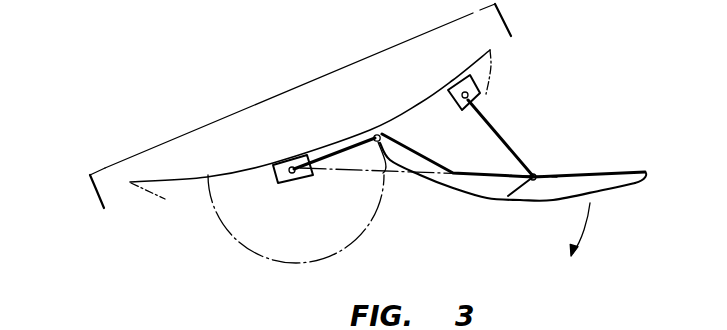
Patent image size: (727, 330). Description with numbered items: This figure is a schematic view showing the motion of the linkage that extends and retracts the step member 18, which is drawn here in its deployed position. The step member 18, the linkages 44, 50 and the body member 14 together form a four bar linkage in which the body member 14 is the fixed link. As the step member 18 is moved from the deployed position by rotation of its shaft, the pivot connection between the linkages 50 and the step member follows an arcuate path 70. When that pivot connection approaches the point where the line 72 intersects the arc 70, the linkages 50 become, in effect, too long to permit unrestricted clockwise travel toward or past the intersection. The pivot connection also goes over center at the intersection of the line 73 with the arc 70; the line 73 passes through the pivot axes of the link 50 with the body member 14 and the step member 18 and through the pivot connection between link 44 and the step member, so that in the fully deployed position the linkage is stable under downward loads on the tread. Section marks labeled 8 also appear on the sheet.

The section line 8- 8 is at (306, 116).
The body member 14 is at (395, 123).
The step member 18 is at (610, 200).
The linkage 44 is at (505, 132).
The linkage 50 is at (327, 158).
The arcuate path 70 is at (364, 219).
The line 72 is at (221, 200).
The line 73 is at (380, 145).